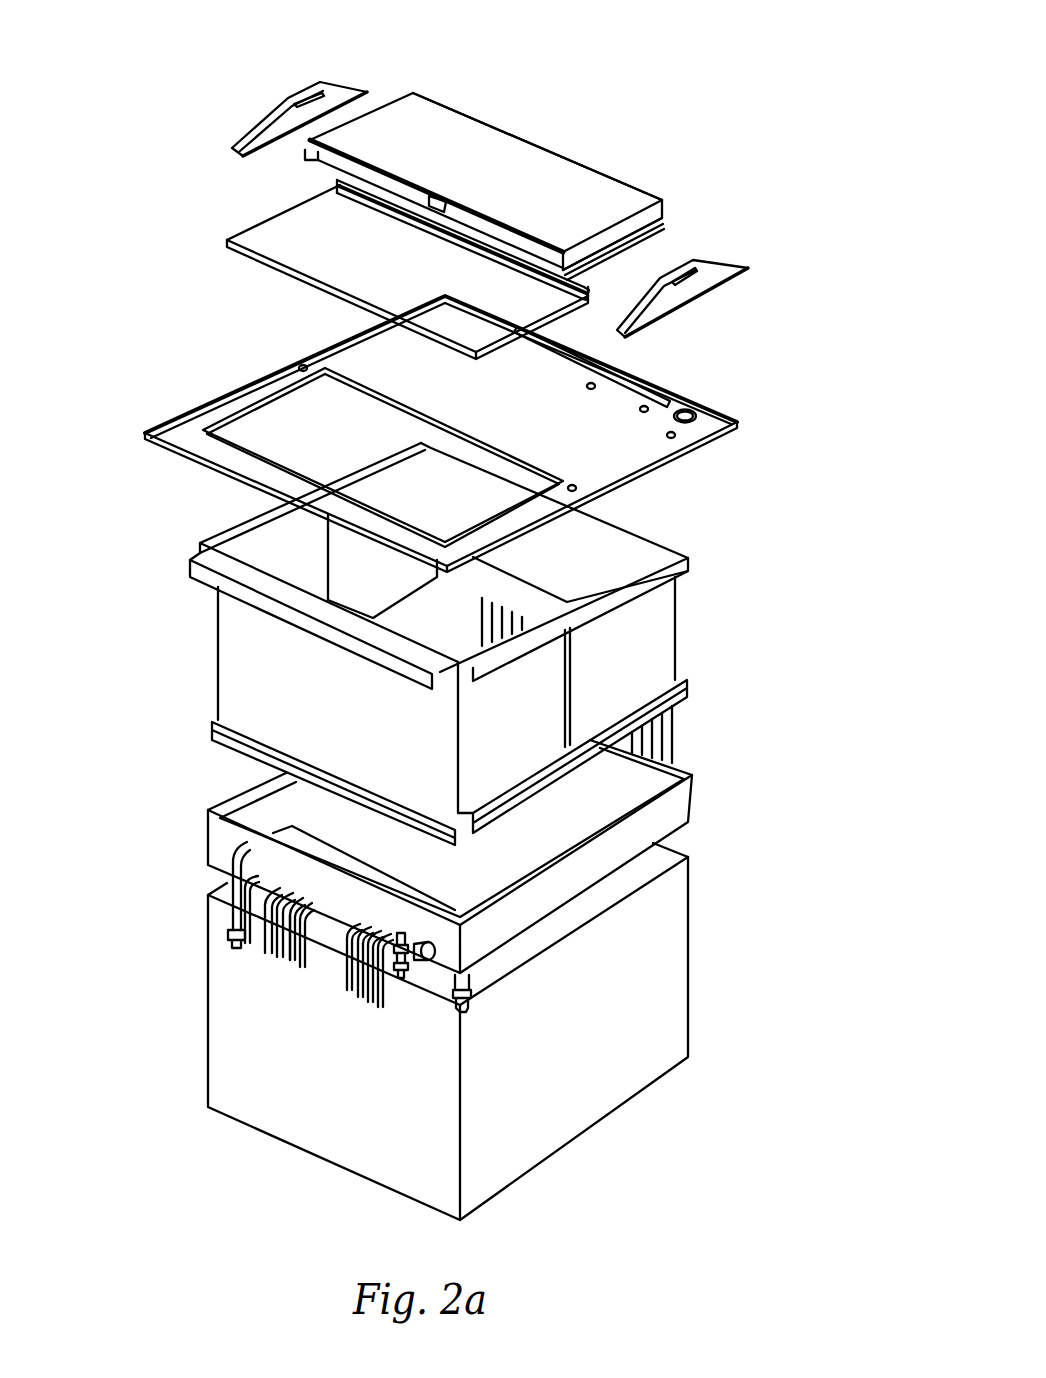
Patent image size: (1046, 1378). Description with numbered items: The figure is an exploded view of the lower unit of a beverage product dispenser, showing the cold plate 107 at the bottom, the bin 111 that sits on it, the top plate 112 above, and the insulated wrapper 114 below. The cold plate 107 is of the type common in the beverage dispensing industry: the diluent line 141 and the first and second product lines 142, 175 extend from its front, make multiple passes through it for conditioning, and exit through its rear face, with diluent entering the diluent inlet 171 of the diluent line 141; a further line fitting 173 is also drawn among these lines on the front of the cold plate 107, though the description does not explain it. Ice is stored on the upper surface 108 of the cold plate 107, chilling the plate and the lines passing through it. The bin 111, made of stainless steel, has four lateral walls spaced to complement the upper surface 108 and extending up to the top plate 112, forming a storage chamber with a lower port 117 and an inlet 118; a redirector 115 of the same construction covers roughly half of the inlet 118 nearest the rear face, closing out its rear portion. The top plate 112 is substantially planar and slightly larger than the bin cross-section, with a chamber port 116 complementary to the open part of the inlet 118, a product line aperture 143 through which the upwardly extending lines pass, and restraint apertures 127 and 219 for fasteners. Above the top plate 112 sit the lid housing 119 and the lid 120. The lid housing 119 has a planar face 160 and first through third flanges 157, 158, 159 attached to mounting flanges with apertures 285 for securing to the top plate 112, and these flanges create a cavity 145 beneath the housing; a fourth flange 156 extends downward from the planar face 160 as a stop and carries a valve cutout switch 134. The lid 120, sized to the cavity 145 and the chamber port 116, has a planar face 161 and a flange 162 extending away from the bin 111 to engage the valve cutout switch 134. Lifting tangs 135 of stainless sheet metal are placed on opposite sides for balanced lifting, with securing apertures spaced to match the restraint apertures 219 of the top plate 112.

The cold plate 107 is at (647, 822).
The upper surface 108 is at (631, 790).
The bin 111 is at (653, 650).
The top plate 112 is at (506, 403).
The insulated wrapper 114 is at (650, 960).
The redirector 115 is at (620, 547).
The chamber port 116 is at (253, 403).
The lower port 117 is at (242, 747).
The inlet 118 is at (255, 548).
The lid housing 119 is at (493, 145).
The lid 120 is at (409, 268).
The restraint apertures 127 is at (303, 367).
The valve cutout switch 134 is at (430, 197).
The lifting tangs 135 is at (270, 114).
The diluent line 141 is at (230, 847).
The first product line 142 is at (273, 957).
The product line aperture 143 is at (347, 168).
The cavity 145 is at (640, 240).
The fourth flange 156 is at (487, 238).
The first flange 157 is at (620, 227).
The second flange 158 is at (583, 167).
The third flange 159 is at (387, 103).
The planar face 160 is at (610, 193).
The planar face 161 is at (277, 243).
The flange 162 is at (397, 210).
The diluent inlet 171 is at (233, 960).
The tube 173 is at (285, 965).
The second product line 175 is at (293, 967).
The restraint apertures 219 is at (588, 480).
The apertures 285 is at (607, 257).